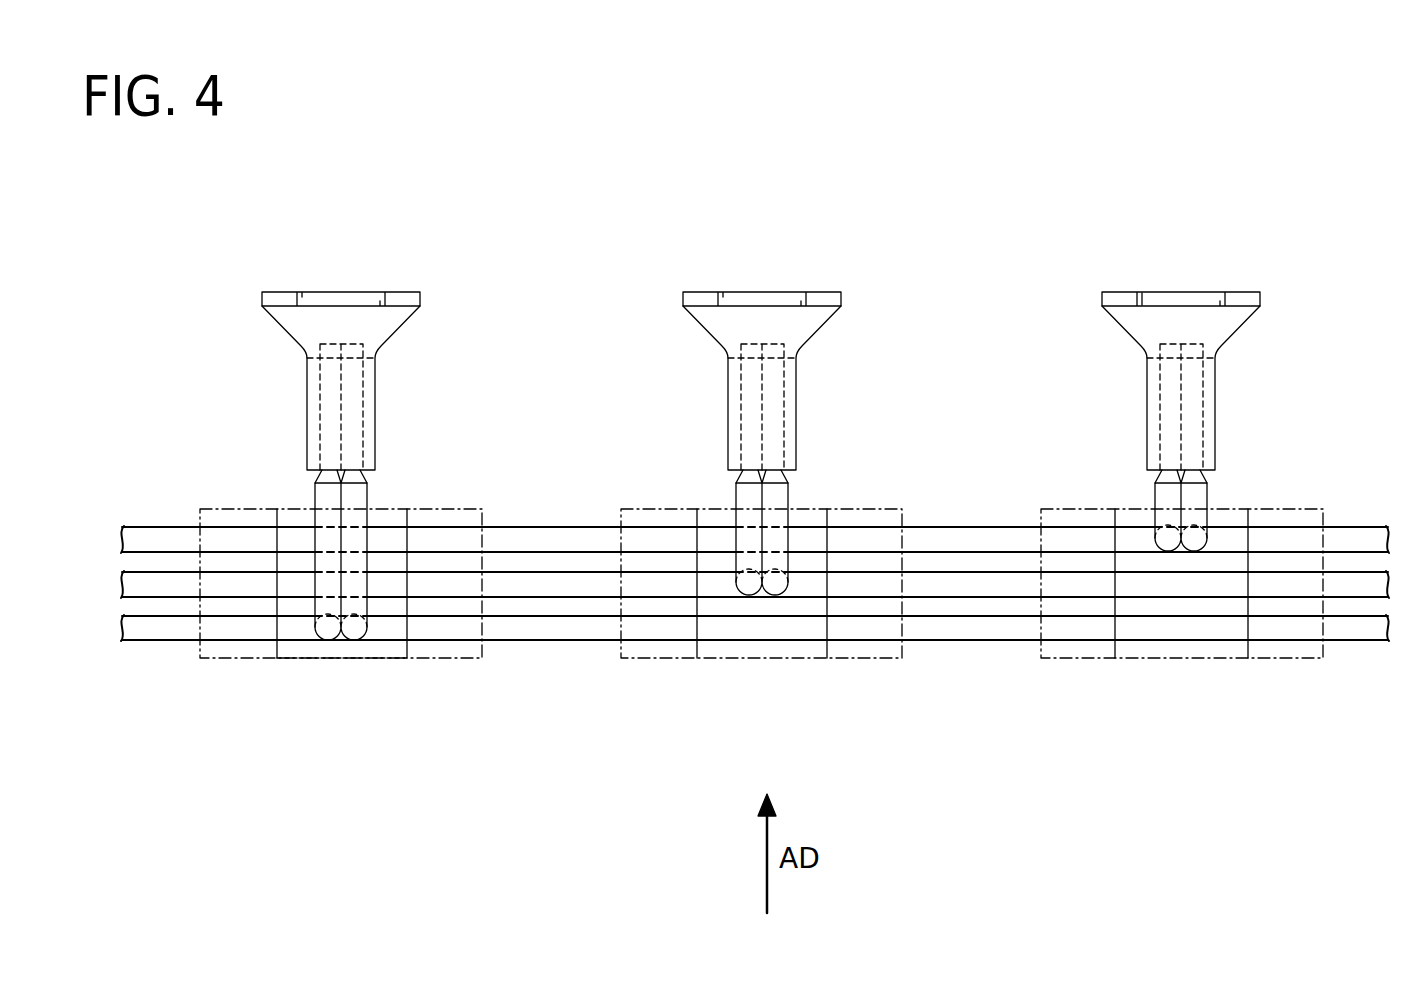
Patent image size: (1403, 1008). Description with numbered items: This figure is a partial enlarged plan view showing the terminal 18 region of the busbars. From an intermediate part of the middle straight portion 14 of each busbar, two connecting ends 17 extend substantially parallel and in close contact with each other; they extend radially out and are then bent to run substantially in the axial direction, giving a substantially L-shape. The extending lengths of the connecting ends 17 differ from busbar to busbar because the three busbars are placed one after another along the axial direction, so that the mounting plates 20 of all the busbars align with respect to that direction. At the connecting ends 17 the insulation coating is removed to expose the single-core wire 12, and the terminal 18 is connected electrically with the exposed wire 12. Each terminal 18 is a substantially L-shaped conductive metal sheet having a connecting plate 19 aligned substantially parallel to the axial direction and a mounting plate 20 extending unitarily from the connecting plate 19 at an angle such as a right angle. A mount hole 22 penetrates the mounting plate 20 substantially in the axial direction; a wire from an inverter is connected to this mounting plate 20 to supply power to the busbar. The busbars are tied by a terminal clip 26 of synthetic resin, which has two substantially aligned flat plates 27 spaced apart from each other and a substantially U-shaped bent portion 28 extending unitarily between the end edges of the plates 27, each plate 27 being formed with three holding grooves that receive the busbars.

The single-core wire 12 is at (1168, 471).
The straight portion 14 is at (977, 535).
The connecting end 17 is at (355, 582).
The terminal 18 is at (1206, 325).
The connecting plate 19 is at (1192, 378).
The mounting plate 20 is at (1184, 294).
The mount hole 22 is at (1151, 294).
The terminal clip 26 is at (278, 668).
The flat plate 27 is at (207, 660).
The bent portion 28 is at (386, 660).